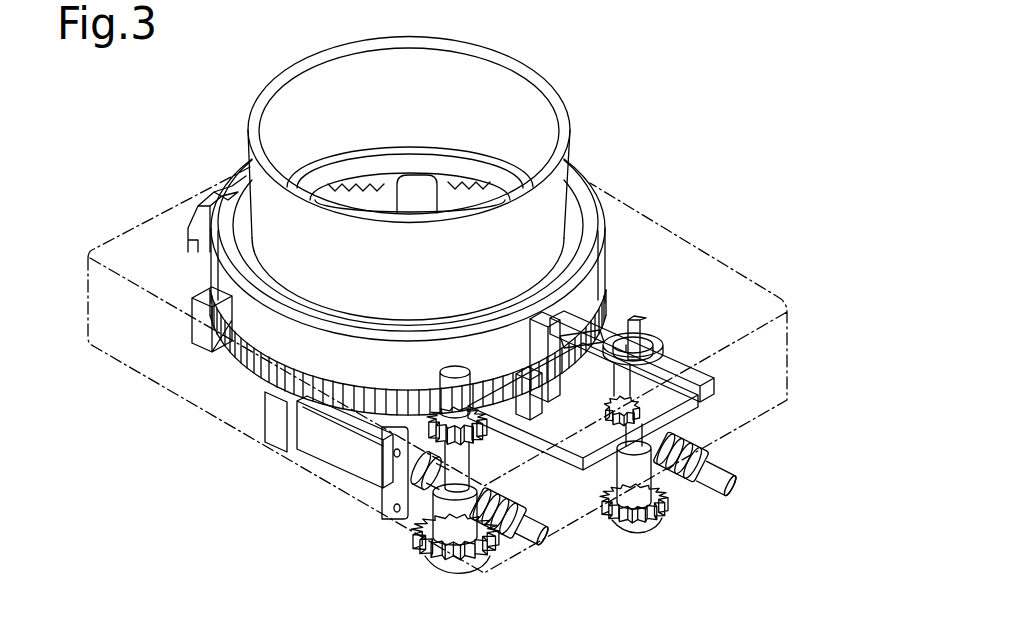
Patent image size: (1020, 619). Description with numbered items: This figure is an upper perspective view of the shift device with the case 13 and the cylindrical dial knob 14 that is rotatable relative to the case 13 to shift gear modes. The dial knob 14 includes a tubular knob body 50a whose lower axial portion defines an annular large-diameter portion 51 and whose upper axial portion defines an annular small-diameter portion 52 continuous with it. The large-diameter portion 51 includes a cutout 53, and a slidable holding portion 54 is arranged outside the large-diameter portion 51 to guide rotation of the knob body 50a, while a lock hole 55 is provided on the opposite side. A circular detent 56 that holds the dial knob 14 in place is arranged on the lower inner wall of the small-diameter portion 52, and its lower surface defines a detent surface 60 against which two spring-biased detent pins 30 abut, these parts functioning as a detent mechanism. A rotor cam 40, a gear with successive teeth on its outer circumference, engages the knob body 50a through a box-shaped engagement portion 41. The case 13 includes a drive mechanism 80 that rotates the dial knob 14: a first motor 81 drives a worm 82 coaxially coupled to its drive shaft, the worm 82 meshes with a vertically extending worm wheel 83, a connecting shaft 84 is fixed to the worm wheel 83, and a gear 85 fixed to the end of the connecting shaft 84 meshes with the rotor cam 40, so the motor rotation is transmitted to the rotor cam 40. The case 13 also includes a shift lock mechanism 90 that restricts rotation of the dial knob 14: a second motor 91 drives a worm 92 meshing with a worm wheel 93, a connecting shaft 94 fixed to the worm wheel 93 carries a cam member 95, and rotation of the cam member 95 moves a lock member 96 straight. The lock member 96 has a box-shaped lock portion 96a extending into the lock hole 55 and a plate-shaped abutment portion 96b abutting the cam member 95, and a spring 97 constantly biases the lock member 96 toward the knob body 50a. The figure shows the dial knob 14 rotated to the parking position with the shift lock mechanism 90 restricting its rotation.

The case 13 is at (790, 343).
The dial knob 14 is at (443, 163).
The detent pins 30 is at (443, 176).
The rotor cam 40 is at (394, 352).
The engagement portion 41 is at (203, 297).
The knob body 50a is at (507, 63).
The large-diameter portion 51 is at (603, 263).
The small-diameter portion 52 is at (443, 163).
The cutout 53 is at (210, 377).
The holding portion 54 is at (190, 213).
The lock hole 55 is at (540, 330).
The detent 56 is at (477, 148).
The detent surface 60 is at (373, 180).
The drive mechanism 80 is at (386, 472).
The first motor 81 is at (267, 417).
The worm 82 is at (518, 543).
The worm wheel 83 is at (440, 557).
The connecting shaft 84 is at (469, 455).
The gear 85 is at (440, 380).
The shift lock mechanism 90 is at (658, 416).
The second motor 91 is at (557, 465).
The worm 92 is at (703, 497).
The worm wheel 93 is at (627, 527).
The connecting shaft 94 is at (662, 425).
The cam member 95 is at (667, 330).
The lock member 96 is at (630, 386).
The lock portion 96a is at (600, 343).
The abutment portion 96b is at (700, 382).
The spring 97 is at (642, 412).